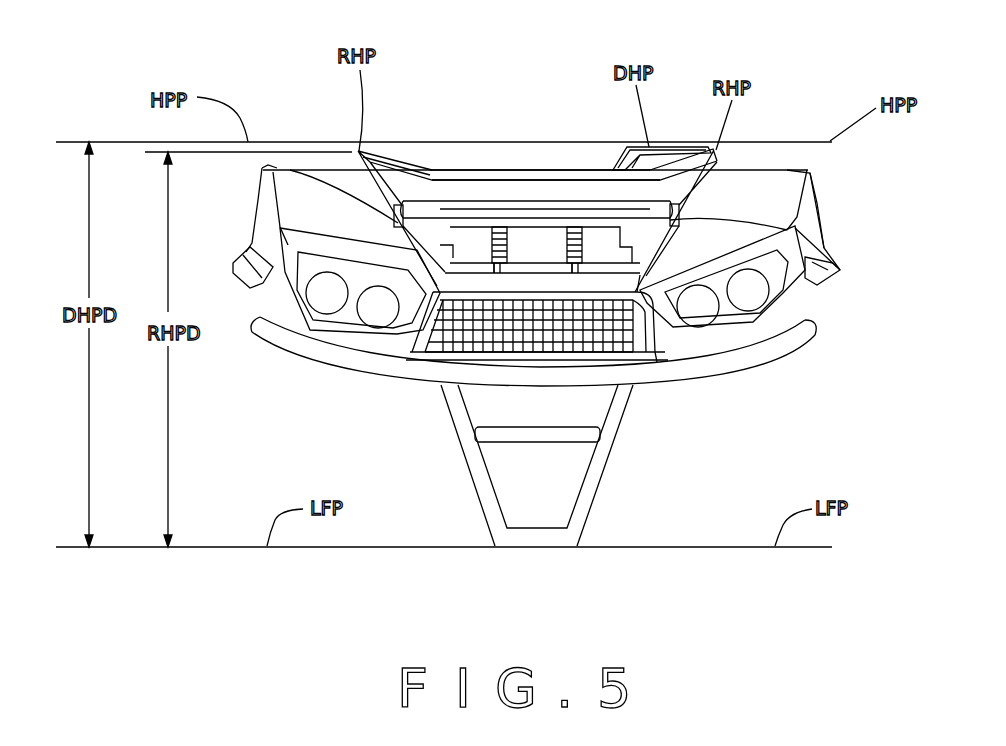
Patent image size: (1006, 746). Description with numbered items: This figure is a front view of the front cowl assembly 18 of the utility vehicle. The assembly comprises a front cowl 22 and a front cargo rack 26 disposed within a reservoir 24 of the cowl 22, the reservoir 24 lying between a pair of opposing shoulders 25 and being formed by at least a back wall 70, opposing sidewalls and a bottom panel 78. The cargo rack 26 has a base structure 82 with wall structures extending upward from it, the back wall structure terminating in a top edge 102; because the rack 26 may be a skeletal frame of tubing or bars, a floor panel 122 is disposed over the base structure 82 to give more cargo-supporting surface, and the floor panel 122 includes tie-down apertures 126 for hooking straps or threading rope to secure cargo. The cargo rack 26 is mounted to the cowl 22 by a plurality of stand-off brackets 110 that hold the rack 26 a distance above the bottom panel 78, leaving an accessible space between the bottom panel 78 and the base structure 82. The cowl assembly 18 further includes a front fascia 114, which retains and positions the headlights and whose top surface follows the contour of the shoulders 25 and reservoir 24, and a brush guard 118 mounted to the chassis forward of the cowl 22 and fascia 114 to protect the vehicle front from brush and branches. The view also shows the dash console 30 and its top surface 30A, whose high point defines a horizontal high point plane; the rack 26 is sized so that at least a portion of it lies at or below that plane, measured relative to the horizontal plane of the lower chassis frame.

The front cowl assembly 18 is at (878, 245).
The front cowl 22 is at (810, 218).
The reservoir 24 is at (728, 180).
The shoulders 25 is at (303, 208).
The front cargo rack 26 is at (464, 156).
The dash console 30 is at (682, 115).
The top surface 30A is at (616, 161).
The back wall 70 is at (380, 212).
The bottom panel 78 is at (280, 229).
The base structure 82 is at (462, 283).
The top edge 102 is at (505, 168).
The stand-off brackets 110 is at (300, 195).
The front fascia 114 is at (826, 306).
The brush guard 118 is at (718, 369).
The floor panel 122 is at (460, 205).
The tie-down aperture 126 is at (573, 228).